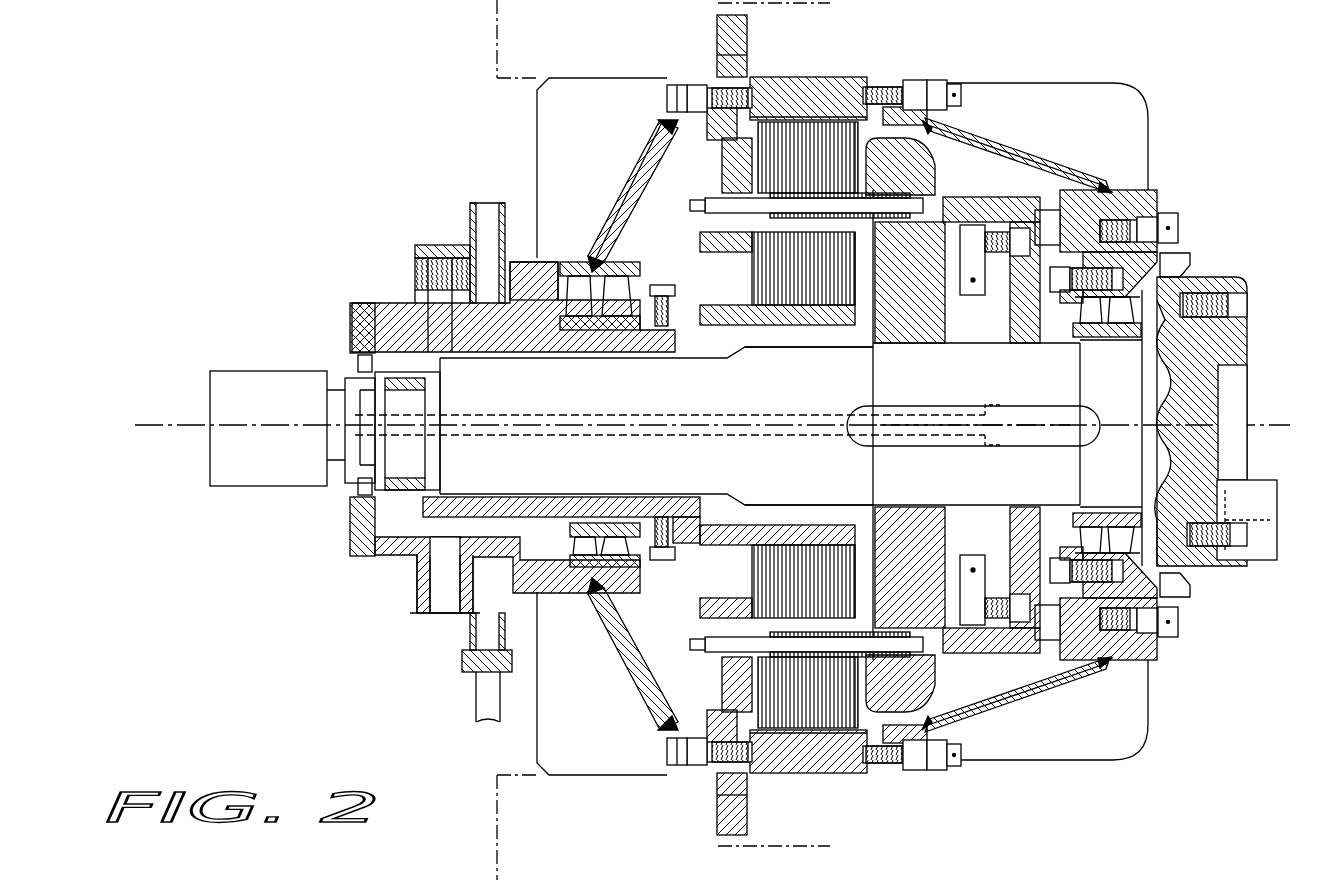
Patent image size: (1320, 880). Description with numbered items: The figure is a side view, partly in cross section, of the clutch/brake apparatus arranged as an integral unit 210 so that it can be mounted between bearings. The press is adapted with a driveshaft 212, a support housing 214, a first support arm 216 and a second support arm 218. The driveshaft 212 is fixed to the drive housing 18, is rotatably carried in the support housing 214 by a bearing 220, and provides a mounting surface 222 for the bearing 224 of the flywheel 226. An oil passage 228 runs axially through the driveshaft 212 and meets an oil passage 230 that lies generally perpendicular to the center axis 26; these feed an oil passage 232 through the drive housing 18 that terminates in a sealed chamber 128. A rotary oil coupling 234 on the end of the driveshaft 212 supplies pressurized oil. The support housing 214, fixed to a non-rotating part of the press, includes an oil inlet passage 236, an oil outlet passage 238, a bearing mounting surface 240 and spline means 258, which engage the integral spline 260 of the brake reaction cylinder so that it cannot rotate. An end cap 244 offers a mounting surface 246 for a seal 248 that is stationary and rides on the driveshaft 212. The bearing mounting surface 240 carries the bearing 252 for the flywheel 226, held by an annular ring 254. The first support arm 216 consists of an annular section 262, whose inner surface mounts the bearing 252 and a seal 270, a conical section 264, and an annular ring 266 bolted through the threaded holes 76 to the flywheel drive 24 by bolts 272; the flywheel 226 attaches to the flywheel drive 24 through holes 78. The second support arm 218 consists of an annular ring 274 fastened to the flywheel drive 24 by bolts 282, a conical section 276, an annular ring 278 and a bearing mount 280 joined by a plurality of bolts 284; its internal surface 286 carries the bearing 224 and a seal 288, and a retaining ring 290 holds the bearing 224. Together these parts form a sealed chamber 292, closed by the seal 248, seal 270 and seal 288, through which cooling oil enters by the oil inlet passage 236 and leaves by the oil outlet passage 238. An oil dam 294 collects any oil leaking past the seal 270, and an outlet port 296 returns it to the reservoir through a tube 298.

The integral unit 210 is at (250, 165).
The flywheel 226 is at (497, 13).
The holes 78 is at (725, 40).
The bolts 272 is at (667, 95).
The annular ring 266 is at (670, 118).
The first support arm 216 is at (640, 165).
The conical section 264 is at (626, 190).
The bearing 252 is at (580, 285).
The threaded holes 76 is at (745, 90).
The flywheel drive 24 is at (825, 80).
The annular ring 274 is at (917, 80).
The bolts 282 is at (950, 95).
The second support arm 218 is at (960, 128).
The conical section 276 is at (1060, 165).
The annular ring 278 is at (1145, 190).
The bolts 284 is at (1175, 228).
The internal surface 286 is at (1172, 265).
The seal 288 is at (1180, 272).
The oil outlet passage 238 is at (440, 245).
The annular section 262 is at (535, 250).
The support housing 214 is at (390, 295).
The end cap 244 is at (350, 320).
The mounting surface 246 is at (355, 365).
The center axis 26 is at (150, 432).
The oil passage 228 is at (508, 420).
The rotary oil coupling 234 is at (228, 485).
The seal 248 is at (365, 495).
The bearing 220 is at (430, 500).
The seal 270 is at (540, 320).
The annular ring 254 is at (650, 292).
The driveshaft 212 is at (550, 360).
The spline means 258 is at (700, 330).
The integral spline 260 is at (720, 330).
The drive housing 18 is at (885, 335).
The oil passage 232 is at (975, 320).
The oil passage 230 is at (985, 385).
The sealed chamber 128 is at (980, 275).
The mounting surface 222 is at (1095, 335).
The bearing 224 is at (1120, 520).
The bearing mounting surface 240 is at (600, 520).
The oil inlet passage 236 is at (440, 595).
The oil dam 294 is at (460, 640).
The outlet port 296 is at (485, 665).
The tube 298 is at (480, 708).
The sealed chamber 292 is at (980, 675).
The retaining ring 290 is at (1090, 650).
The bearing mount 280 is at (1180, 595).